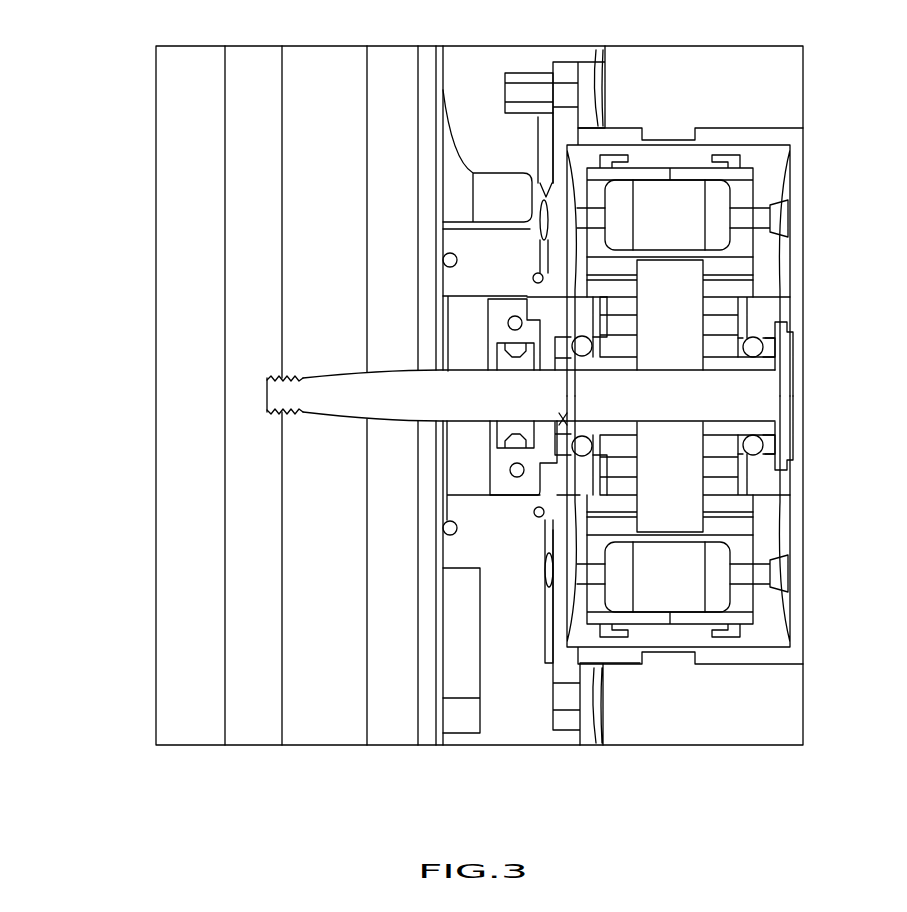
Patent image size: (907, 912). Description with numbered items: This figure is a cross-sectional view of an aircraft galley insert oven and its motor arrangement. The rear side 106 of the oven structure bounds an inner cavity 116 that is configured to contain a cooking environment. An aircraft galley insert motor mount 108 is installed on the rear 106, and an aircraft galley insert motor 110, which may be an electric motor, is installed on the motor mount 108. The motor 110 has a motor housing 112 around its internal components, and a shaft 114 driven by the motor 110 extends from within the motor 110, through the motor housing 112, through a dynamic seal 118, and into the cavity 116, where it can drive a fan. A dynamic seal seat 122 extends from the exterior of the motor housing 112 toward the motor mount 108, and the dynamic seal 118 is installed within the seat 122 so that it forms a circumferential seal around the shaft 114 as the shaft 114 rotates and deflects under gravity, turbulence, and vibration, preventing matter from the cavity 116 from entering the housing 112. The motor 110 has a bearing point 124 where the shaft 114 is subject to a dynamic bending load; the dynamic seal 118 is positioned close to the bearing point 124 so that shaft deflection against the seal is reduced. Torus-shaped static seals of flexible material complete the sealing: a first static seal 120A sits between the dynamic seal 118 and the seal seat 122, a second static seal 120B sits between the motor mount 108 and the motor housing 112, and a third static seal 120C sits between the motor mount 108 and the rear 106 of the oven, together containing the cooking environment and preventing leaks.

The rear side 106 is at (427, 80).
The aircraft galley insert motor mount 108 is at (487, 80).
The aircraft galley insert motor 110 is at (670, 210).
The motor housing 112 is at (560, 197).
The shaft 114 is at (335, 387).
The inner cavity 116 is at (253, 720).
The dynamic seal 118 is at (502, 330).
The first static seal 120A is at (509, 319).
The second static seal 120B is at (534, 276).
The third static seal 120C is at (443, 259).
The dynamic seal seat 122 is at (527, 310).
The bearing point 124 is at (567, 414).